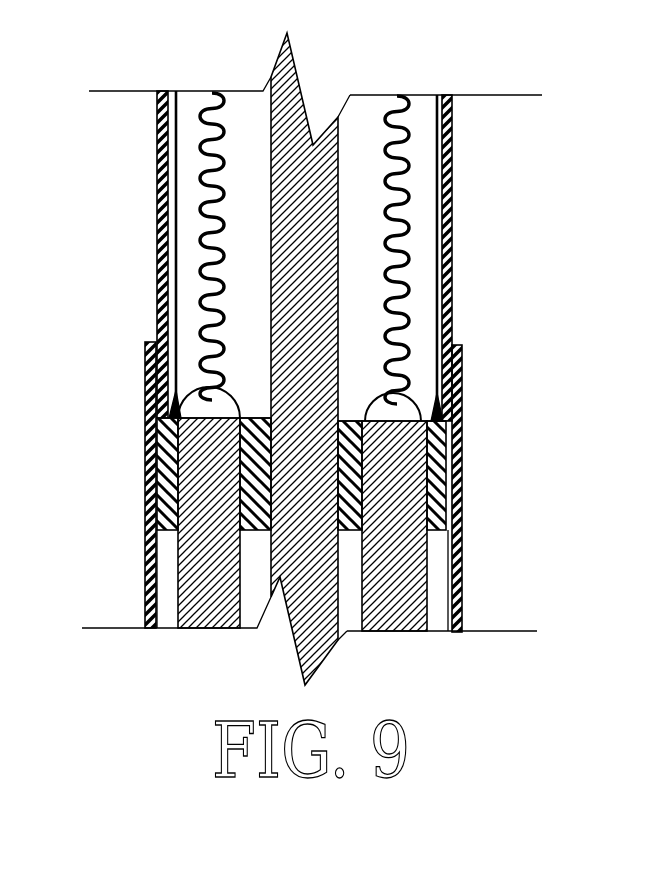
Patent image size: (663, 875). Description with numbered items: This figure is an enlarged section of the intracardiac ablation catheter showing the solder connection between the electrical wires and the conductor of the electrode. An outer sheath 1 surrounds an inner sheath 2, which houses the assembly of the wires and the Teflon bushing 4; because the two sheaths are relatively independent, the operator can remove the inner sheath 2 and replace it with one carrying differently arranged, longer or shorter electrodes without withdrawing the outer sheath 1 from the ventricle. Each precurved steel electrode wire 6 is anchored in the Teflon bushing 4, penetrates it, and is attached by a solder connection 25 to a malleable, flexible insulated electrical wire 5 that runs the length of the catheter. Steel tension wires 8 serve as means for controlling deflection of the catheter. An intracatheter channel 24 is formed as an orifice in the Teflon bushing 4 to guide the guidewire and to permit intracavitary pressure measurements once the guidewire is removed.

The outer sheath 1 is at (142, 577).
The inner sheath 2 is at (453, 235).
The Teflon bushing 4 is at (458, 475).
The electrical wire 5 is at (400, 330).
The electrode wire 6 is at (428, 593).
The tension wire 8 is at (177, 120).
The intracatheter channel 24 is at (303, 98).
The solder connection 25 is at (178, 408).